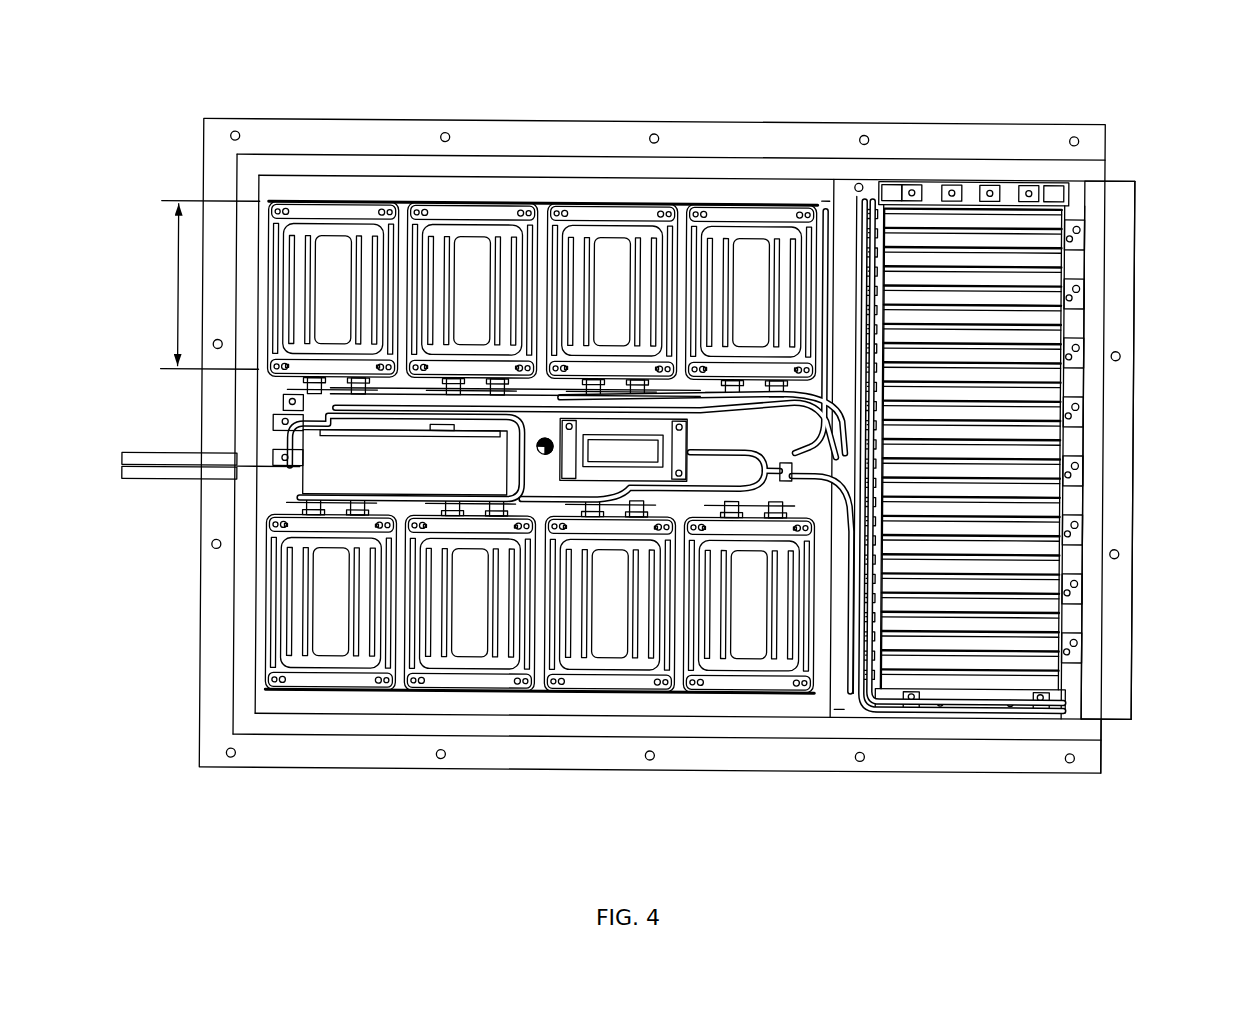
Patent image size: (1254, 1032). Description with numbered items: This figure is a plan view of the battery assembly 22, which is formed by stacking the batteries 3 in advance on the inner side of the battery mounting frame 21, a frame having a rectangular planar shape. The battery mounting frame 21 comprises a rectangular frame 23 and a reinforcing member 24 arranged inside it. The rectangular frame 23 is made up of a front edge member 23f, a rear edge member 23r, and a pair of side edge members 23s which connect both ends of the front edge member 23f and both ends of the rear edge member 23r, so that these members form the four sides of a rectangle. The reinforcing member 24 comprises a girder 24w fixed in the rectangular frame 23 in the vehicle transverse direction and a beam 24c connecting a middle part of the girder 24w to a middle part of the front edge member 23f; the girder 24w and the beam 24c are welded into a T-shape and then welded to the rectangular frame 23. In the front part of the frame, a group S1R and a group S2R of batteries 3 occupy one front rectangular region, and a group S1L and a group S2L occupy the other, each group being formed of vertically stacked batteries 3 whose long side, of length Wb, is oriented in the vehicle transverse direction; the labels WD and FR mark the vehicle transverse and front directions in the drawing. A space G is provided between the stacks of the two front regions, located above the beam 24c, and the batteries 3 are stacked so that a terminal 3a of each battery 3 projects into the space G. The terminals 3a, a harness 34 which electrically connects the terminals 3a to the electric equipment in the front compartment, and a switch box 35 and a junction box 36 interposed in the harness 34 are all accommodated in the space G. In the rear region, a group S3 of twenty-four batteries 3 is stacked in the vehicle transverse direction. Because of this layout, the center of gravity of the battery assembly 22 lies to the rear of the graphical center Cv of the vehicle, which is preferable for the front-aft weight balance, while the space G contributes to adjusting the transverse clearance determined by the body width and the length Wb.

The battery assembly 22 is at (1148, 96).
The battery mounting frame 21 is at (1108, 166).
The rectangular frame 23 is at (1138, 357).
The side edge member 23s is at (928, 158).
The rear edge member 23r is at (1085, 491).
The front edge member 23f is at (235, 657).
The battery 3 is at (470, 235).
The terminal 3a is at (356, 382).
The reinforcing member 24 is at (822, 212).
The beam 24c is at (262, 425).
The girder 24w is at (840, 712).
The harness 34 is at (860, 188).
The switch box 35 is at (580, 482).
The junction box 36 is at (355, 473).
The group of batteries S1R is at (441, 201).
The group of batteries S2R is at (755, 201).
The group of batteries S1L is at (333, 696).
The group of batteries S2L is at (648, 696).
The group of batteries S3 is at (1068, 435).
The graphical center of the vehicle Cv is at (546, 438).
The space G is at (262, 445).
The length of the long side of the batteries Wb is at (195, 284).
The width direction WD is at (1228, 800).
The front direction FR is at (1228, 800).